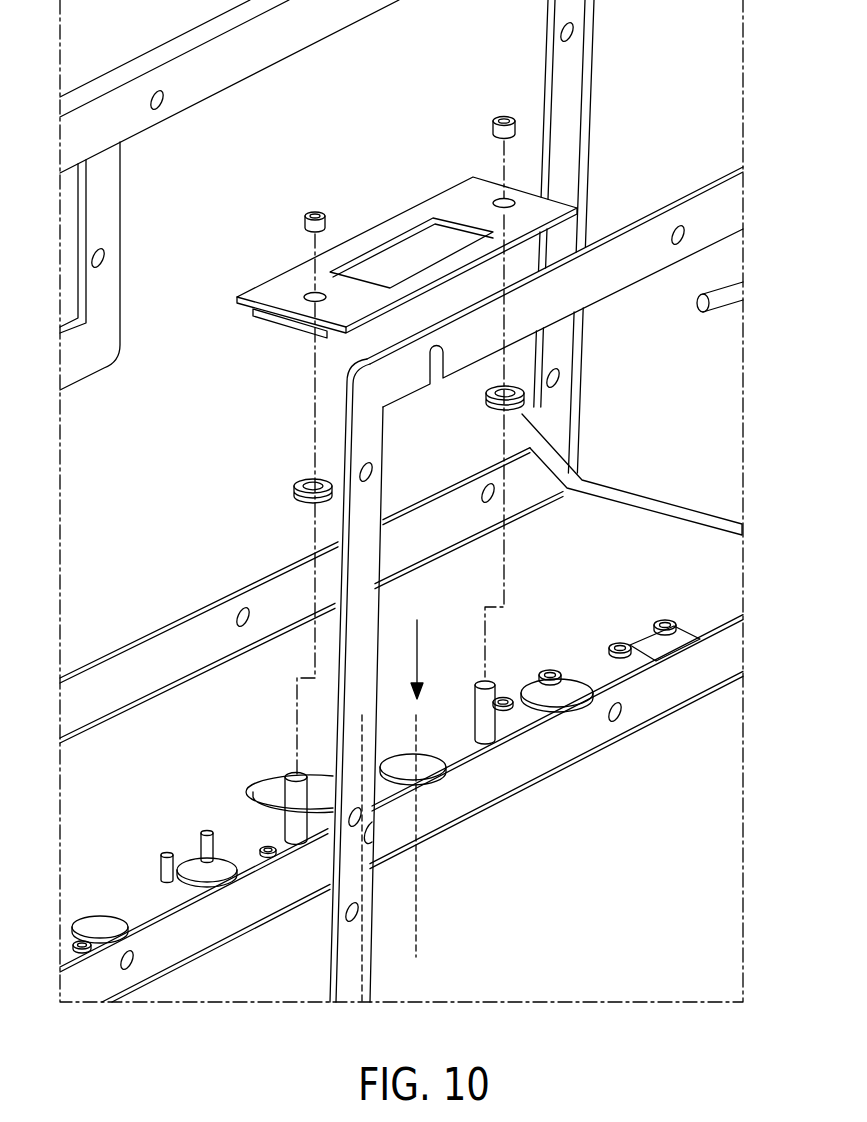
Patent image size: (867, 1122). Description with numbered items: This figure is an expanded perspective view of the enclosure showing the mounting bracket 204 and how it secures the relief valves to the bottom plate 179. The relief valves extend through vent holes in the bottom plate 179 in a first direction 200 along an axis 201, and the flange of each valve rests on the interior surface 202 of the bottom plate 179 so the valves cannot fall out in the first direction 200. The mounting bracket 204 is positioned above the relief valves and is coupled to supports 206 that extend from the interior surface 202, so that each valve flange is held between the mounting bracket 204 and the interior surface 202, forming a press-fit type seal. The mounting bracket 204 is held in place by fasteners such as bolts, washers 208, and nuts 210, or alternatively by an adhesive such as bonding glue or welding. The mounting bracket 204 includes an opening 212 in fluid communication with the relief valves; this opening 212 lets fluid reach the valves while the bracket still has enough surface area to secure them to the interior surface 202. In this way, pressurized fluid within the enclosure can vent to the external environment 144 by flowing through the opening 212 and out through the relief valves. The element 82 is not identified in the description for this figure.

The rail 82 is at (433, 847).
The external environment 144 is at (604, 969).
The bottom plate 179 is at (267, 943).
The first direction 200 is at (418, 652).
The axis 201 is at (416, 933).
The interior surface 202 is at (677, 592).
The mounting bracket 204 is at (547, 207).
The supports 206 is at (284, 802).
The washers 208 is at (305, 478).
The nuts 210 is at (493, 127).
The opening 212 is at (400, 225).